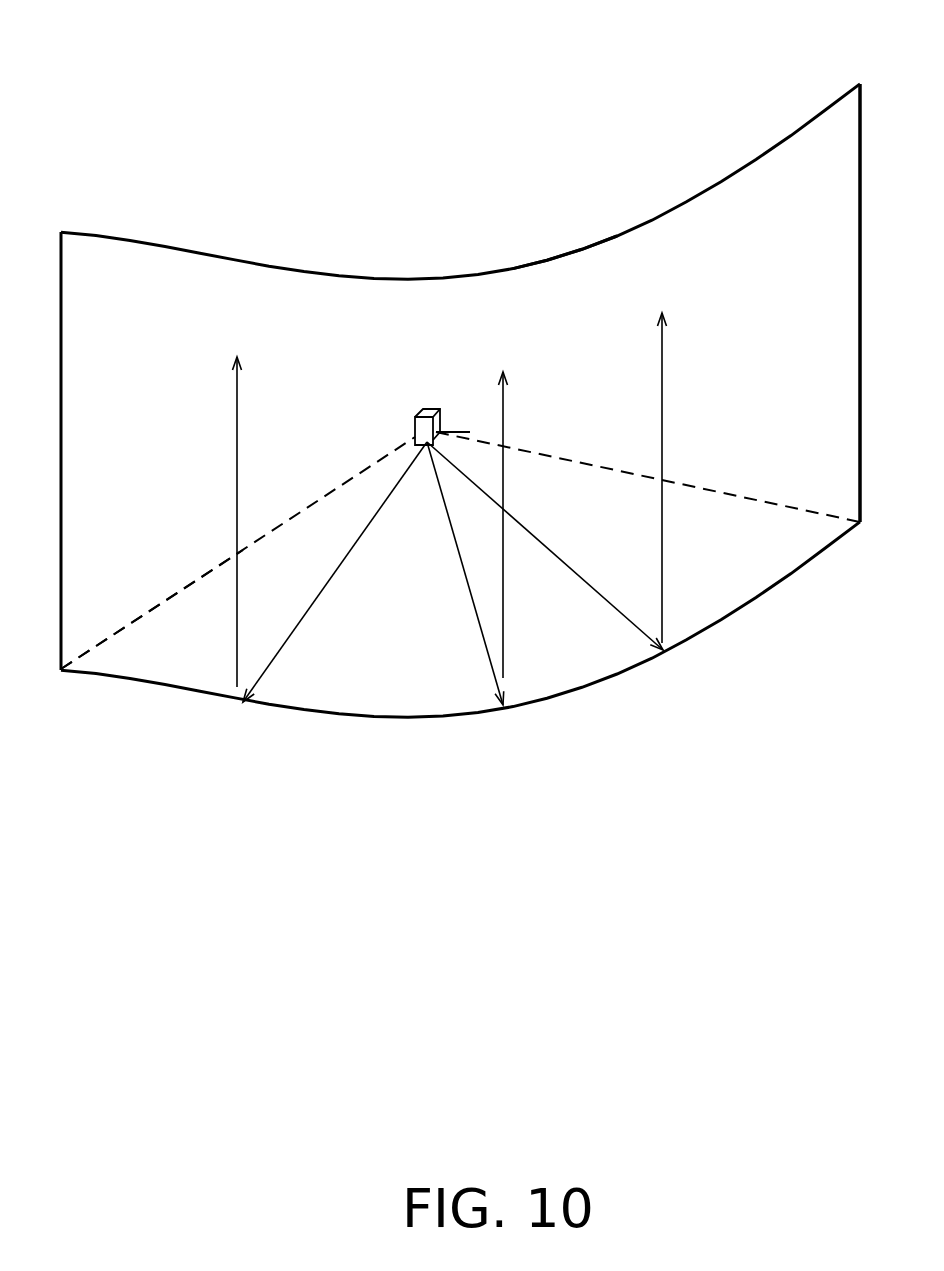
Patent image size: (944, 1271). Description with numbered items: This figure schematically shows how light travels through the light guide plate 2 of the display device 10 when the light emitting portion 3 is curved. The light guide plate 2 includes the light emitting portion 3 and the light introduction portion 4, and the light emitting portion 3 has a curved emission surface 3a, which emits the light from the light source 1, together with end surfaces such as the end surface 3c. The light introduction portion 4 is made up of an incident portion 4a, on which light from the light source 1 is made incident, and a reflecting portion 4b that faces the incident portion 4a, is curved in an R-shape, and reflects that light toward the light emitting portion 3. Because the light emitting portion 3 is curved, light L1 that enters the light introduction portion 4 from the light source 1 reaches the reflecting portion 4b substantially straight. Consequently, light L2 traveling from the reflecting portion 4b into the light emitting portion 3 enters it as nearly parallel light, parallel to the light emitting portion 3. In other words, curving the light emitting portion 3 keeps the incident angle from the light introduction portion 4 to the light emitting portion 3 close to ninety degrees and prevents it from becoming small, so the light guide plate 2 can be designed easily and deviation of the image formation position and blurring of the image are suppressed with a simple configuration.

The light source 1 is at (428, 412).
The light guide plate 2 is at (401, 730).
The light emitting portion 3 is at (155, 247).
The emission surface 3a is at (755, 300).
The end surface 3c is at (565, 245).
The light introduction portion 4 is at (163, 590).
The incident portion 4a is at (447, 432).
The reflecting portion 4b is at (222, 700).
The display device 10 is at (278, 185).
The light L1 is at (276, 655).
The light L2 is at (237, 425).